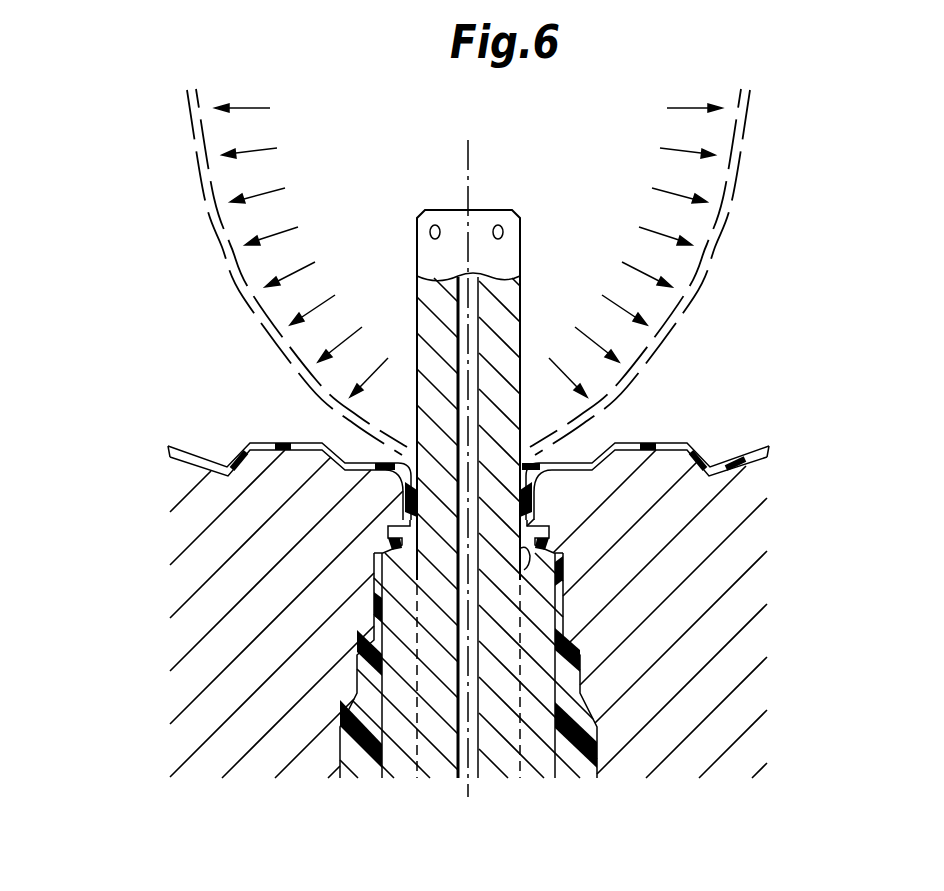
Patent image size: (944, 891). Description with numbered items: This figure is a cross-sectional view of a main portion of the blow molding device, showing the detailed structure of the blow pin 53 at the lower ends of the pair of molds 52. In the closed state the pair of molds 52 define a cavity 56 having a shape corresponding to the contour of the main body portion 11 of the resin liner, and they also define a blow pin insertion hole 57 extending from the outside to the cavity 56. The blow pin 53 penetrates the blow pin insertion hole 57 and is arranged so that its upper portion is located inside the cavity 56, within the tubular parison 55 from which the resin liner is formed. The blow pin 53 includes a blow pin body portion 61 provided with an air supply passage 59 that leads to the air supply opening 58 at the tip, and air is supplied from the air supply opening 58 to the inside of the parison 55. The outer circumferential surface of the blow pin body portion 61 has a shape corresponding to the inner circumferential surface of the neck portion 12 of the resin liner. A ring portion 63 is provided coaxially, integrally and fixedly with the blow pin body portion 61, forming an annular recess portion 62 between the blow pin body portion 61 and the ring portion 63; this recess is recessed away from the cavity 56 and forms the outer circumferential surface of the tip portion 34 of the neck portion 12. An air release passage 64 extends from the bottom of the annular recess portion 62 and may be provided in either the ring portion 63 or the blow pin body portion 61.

The main body portion 11 is at (275, 447).
The neck portion 12 is at (413, 517).
The tip portion 34 is at (413, 556).
The molds 52 is at (207, 752).
The blow pin 53 is at (467, 500).
The parison 55 is at (185, 228).
The cavity 56 is at (378, 147).
The blow pin insertion hole 57 is at (600, 765).
The air supply opening 58 is at (436, 225).
The air supply passage 59 is at (462, 312).
The blow pin body portion 61 is at (512, 325).
The annular recess portion 62 is at (530, 545).
The ring portion 63 is at (542, 556).
The air release passage 64 is at (415, 771).